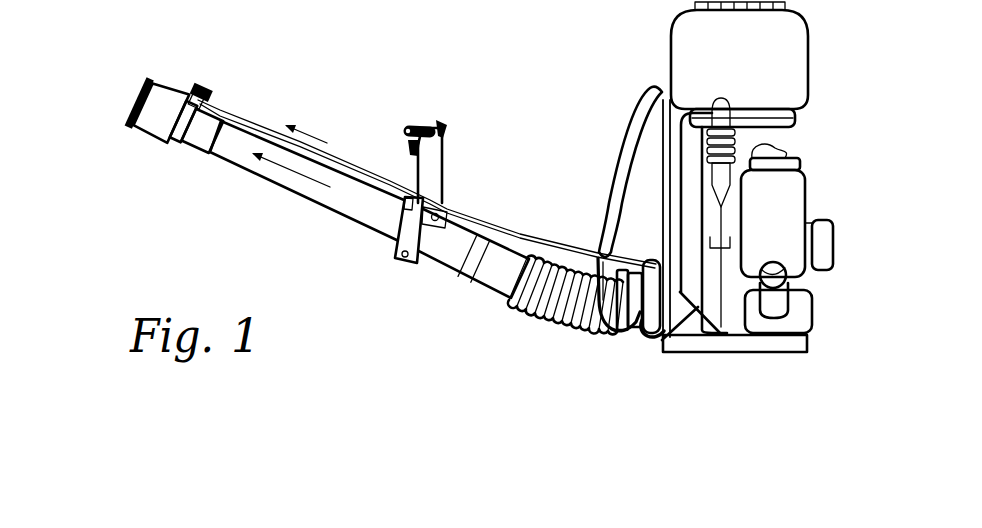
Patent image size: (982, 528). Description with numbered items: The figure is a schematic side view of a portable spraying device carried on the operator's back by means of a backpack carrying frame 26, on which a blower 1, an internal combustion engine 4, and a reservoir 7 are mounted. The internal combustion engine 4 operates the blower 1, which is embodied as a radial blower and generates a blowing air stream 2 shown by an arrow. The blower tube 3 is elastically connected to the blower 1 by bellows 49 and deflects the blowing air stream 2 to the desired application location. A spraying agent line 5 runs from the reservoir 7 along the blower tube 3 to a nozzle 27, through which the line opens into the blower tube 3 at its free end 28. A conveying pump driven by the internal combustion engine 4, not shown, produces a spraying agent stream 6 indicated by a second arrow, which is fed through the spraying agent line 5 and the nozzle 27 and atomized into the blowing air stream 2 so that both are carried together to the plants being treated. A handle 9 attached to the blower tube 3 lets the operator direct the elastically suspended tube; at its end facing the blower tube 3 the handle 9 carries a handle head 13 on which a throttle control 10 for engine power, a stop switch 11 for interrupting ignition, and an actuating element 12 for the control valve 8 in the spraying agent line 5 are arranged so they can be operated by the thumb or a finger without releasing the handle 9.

The blower 1 is at (731, 214).
The blowing air stream 2 is at (290, 168).
The blower tube 3 is at (230, 165).
The internal combustion engine 4 is at (782, 227).
The spraying agent line 5 is at (343, 168).
The spraying agent stream 6 is at (325, 140).
The reservoir 7 is at (749, 67).
The control valve 8 is at (447, 203).
The handle 9 is at (430, 177).
The throttle control 10 is at (407, 150).
The stop switch 11 is at (434, 117).
The actuating element 12 is at (447, 133).
The handle head 13 is at (449, 107).
The backpack carrying frame 26 is at (673, 200).
The nozzle 27 is at (200, 86).
The free end 28 is at (133, 108).
The bellows 49 is at (553, 313).